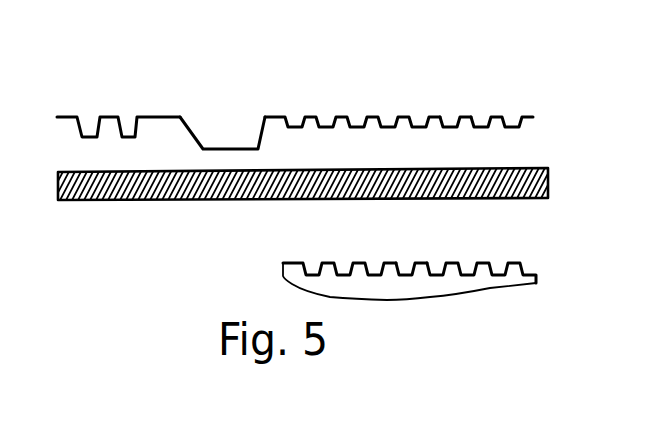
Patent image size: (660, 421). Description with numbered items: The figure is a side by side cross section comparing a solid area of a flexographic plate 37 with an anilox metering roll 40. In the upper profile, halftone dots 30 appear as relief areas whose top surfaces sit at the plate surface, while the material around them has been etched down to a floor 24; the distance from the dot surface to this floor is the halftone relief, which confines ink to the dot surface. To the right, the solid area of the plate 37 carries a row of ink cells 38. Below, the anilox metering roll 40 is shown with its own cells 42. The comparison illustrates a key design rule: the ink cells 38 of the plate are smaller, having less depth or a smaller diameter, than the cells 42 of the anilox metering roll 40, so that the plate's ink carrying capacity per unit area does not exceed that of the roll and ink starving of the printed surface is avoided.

The floor 24 is at (223, 148).
The halftone dots 30 is at (100, 126).
The plate 37 is at (399, 81).
The ink cells 38 is at (447, 125).
The anilox metering roll 40 is at (458, 256).
The cells 42 is at (403, 273).